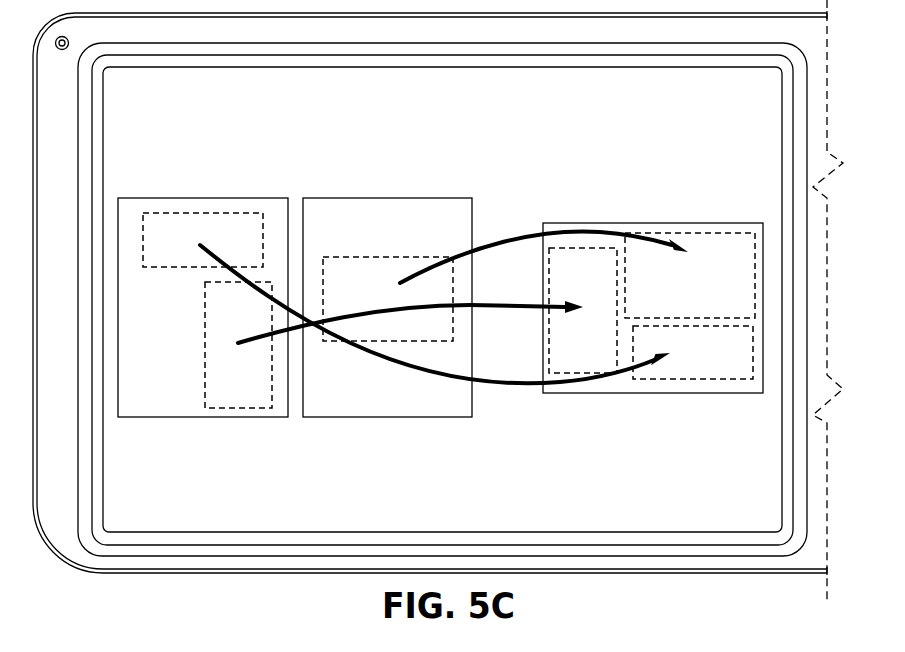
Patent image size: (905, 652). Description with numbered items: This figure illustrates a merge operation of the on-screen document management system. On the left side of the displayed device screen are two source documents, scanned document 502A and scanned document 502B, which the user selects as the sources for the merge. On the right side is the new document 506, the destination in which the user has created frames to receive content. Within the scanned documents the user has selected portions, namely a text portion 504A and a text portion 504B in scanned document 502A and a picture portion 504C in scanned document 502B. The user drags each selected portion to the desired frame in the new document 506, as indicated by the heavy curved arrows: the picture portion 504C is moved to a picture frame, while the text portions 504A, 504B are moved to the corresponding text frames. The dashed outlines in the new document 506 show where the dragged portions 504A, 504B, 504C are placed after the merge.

The scanned document 502A is at (209, 198).
The scanned document 502B is at (348, 198).
The portion 504A is at (143, 221).
The portion 504B is at (203, 370).
The portion 504C is at (345, 257).
The new document 506 is at (632, 223).